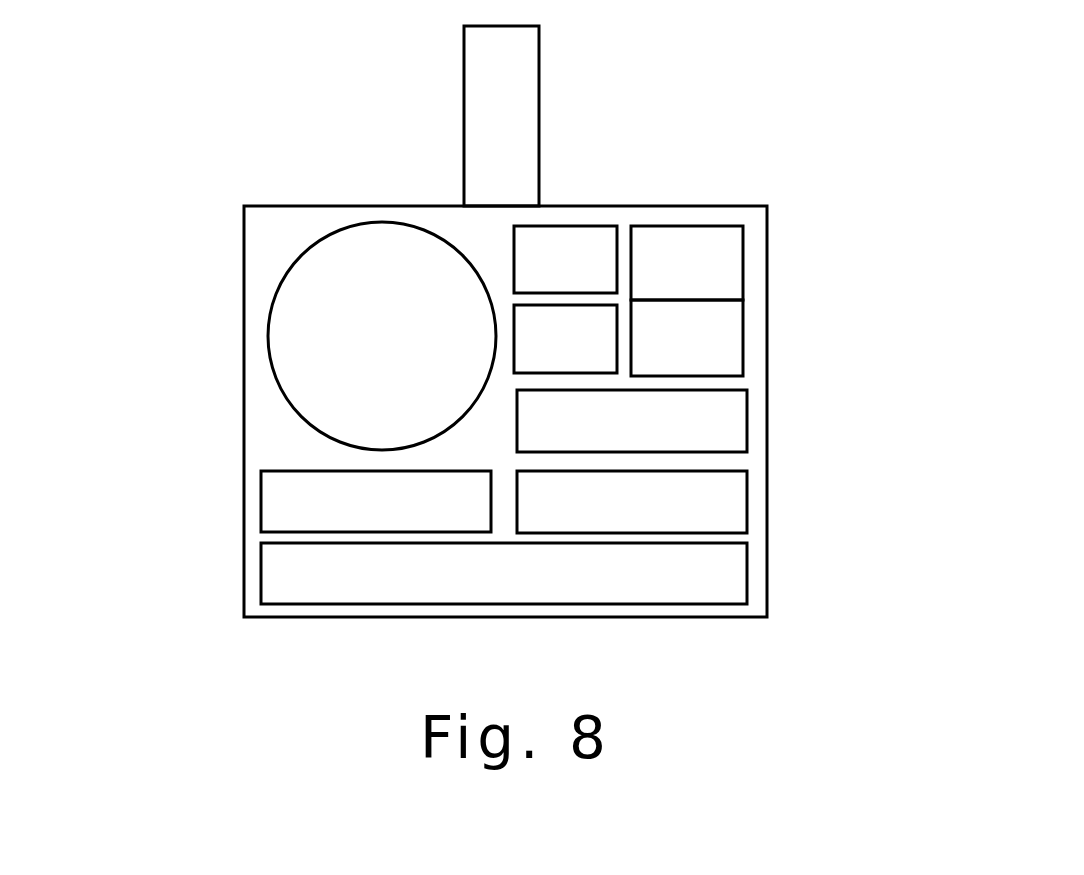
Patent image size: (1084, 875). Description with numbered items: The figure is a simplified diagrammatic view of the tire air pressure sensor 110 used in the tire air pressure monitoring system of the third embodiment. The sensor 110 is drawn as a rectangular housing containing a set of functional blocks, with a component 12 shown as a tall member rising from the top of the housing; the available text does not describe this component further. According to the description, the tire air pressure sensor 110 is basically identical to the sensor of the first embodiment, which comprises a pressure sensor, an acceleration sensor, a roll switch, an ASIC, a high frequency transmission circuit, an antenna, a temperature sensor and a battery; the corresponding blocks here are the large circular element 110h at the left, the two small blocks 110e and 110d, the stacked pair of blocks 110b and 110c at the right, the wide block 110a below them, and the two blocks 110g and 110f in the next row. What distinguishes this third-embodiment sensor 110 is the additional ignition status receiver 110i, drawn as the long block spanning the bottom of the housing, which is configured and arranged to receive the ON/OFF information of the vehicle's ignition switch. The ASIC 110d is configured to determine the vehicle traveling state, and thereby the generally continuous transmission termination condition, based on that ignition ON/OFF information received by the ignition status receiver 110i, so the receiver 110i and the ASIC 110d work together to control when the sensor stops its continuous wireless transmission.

The tire air pressure sensor 110 is at (265, 190).
The handle 12 is at (516, 128).
The dial 110h is at (315, 283).
The button 110e is at (571, 250).
The ASIC 110d is at (541, 350).
The button 110b is at (686, 268).
The button 110c is at (688, 350).
The button 110a is at (688, 423).
The button 110g is at (278, 502).
The button 110f is at (687, 502).
The ignition status receiver 110i is at (278, 577).